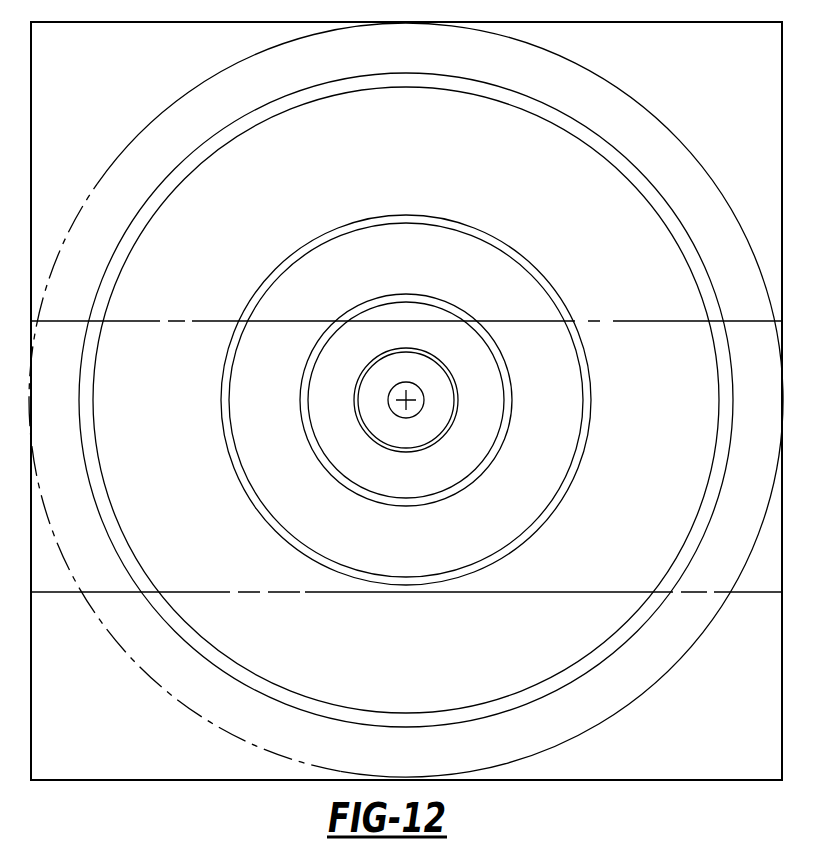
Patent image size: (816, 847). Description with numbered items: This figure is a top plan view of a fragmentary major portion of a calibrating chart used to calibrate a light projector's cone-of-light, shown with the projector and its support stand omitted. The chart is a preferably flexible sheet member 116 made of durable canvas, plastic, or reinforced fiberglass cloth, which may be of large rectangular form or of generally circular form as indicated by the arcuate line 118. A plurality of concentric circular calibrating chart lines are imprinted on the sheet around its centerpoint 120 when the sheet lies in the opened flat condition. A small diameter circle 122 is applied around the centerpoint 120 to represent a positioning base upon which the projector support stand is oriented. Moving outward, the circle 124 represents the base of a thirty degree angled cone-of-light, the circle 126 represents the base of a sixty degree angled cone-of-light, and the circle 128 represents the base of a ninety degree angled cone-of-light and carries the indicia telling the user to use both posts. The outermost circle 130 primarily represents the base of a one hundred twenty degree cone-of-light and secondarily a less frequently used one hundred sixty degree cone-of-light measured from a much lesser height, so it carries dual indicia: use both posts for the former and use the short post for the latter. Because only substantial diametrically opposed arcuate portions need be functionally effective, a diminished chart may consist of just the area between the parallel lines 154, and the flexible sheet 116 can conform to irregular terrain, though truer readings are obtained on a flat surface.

The flexible sheet member 116 is at (719, 74).
The arcuate line 118 is at (694, 155).
The centerpoint 120 is at (409, 389).
The small diameter circle 122 is at (417, 366).
The circle 124 is at (382, 450).
The circle 126 is at (378, 482).
The circle 128 is at (385, 560).
The circle 130 is at (375, 687).
The parallel lines 154 is at (593, 590).